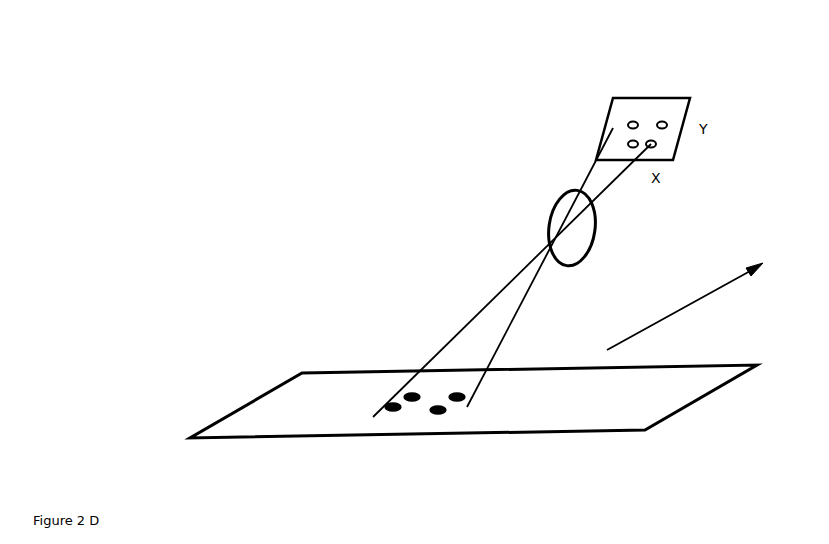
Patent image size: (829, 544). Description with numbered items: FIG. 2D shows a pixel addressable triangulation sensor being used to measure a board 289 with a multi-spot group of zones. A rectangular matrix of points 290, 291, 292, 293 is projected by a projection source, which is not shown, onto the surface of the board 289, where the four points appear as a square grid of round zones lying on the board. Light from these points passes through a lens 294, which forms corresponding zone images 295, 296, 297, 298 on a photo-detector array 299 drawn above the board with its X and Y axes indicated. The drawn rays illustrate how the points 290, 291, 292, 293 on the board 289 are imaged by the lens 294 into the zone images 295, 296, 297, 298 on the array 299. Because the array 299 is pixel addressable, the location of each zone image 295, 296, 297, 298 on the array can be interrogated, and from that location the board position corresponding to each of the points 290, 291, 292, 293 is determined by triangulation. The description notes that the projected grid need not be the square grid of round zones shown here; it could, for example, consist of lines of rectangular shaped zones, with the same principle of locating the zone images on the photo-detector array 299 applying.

The board 289 is at (690, 406).
The projected point 290 is at (391, 418).
The projected point 291 is at (438, 416).
The projected point 292 is at (410, 391).
The projected point 293 is at (461, 389).
The lens 294 is at (597, 230).
The zone image 295 is at (628, 142).
The zone image 296 is at (629, 123).
The zone image 297 is at (663, 121).
The zone image 298 is at (656, 142).
The photo-detector array 299 is at (604, 132).